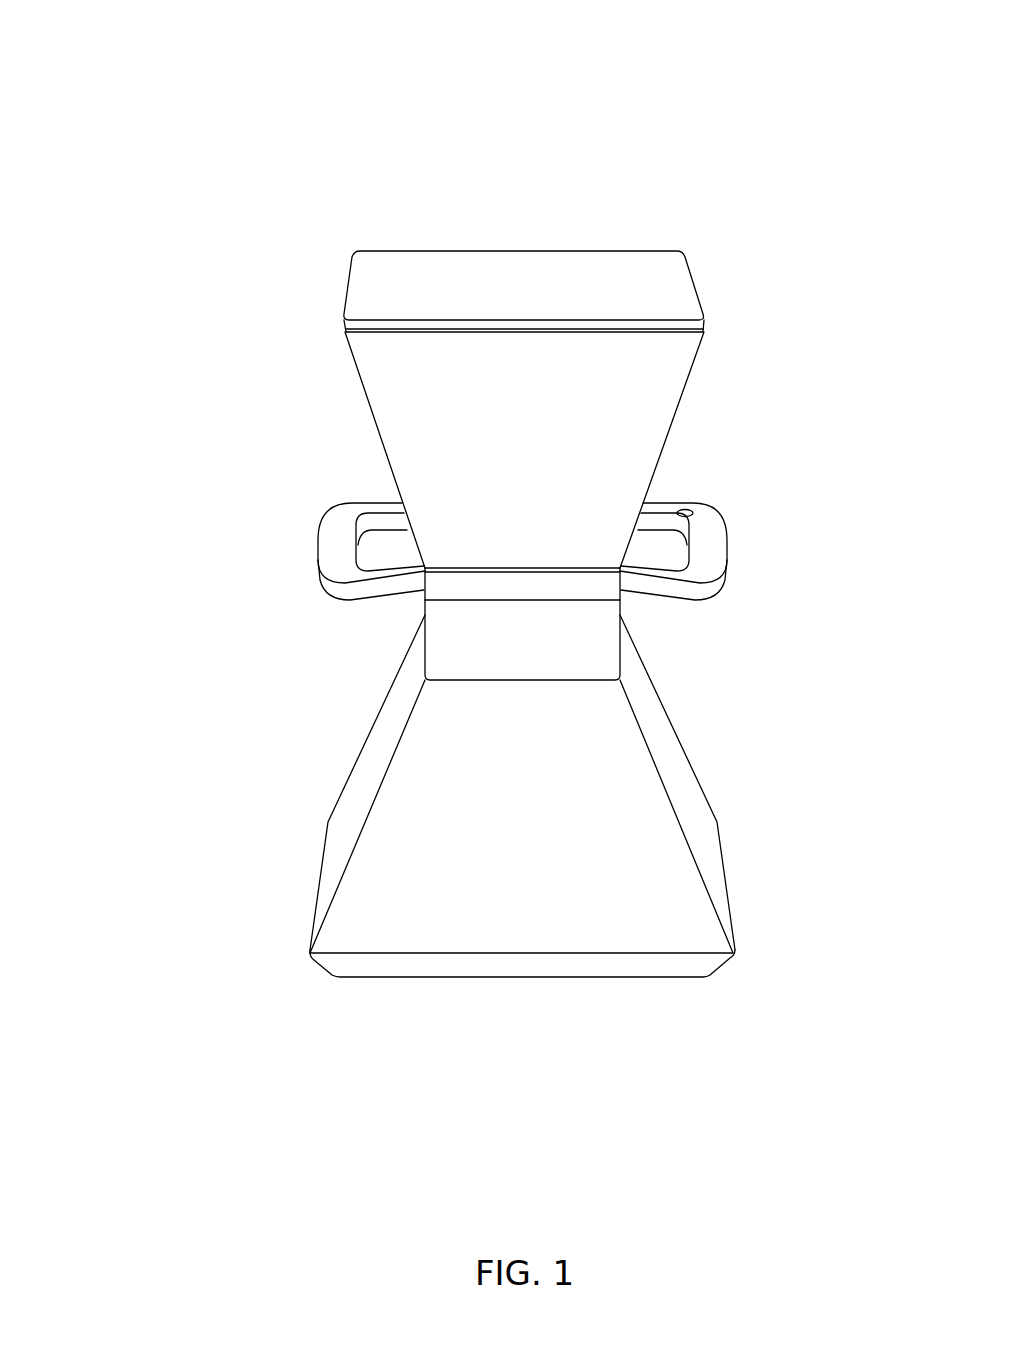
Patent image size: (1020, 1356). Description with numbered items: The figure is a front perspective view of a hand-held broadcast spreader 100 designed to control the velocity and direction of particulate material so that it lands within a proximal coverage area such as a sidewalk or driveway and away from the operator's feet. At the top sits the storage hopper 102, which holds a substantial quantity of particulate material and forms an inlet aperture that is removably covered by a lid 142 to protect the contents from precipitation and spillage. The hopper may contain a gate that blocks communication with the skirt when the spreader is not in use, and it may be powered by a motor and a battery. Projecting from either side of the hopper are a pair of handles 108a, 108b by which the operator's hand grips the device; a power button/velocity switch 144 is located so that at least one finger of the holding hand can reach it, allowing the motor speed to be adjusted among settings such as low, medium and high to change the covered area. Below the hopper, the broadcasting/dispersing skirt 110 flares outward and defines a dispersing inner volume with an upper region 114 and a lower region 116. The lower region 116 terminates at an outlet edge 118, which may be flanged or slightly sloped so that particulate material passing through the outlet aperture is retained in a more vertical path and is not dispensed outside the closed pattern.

The broadcast spreader 100 is at (100, 100).
The storage hopper 102 is at (706, 397).
The handle 108a is at (717, 546).
The handle 108b is at (318, 528).
The broadcasting/dispersing skirt 110 is at (736, 786).
The upper region 114 is at (390, 711).
The lower region 116 is at (307, 914).
The outlet edge 118 is at (672, 973).
The lid 142 is at (670, 283).
The power button/velocity switch 144 is at (692, 510).